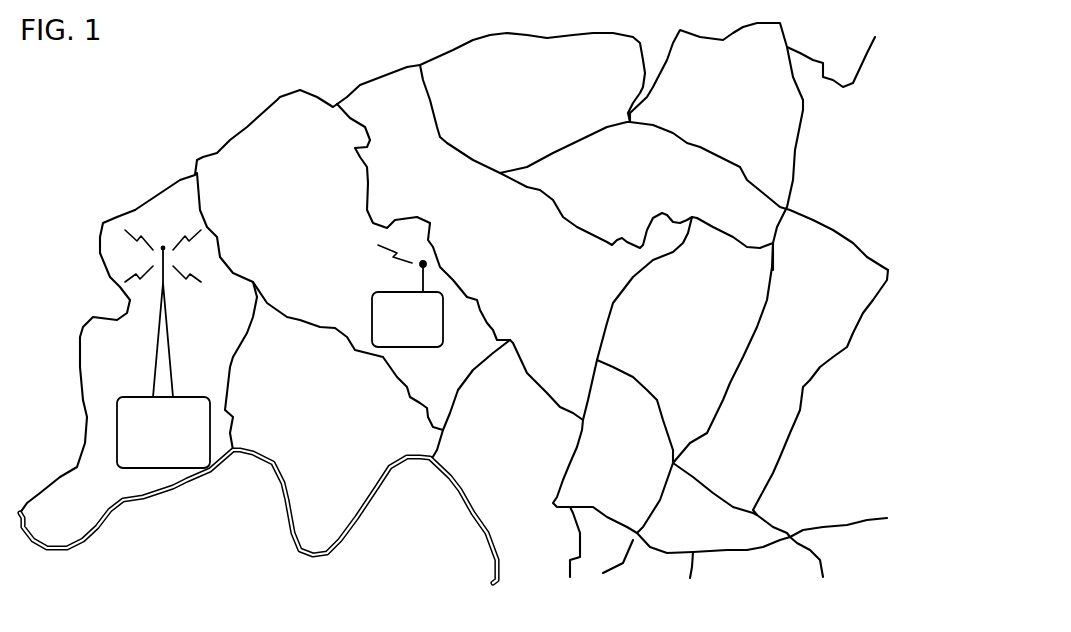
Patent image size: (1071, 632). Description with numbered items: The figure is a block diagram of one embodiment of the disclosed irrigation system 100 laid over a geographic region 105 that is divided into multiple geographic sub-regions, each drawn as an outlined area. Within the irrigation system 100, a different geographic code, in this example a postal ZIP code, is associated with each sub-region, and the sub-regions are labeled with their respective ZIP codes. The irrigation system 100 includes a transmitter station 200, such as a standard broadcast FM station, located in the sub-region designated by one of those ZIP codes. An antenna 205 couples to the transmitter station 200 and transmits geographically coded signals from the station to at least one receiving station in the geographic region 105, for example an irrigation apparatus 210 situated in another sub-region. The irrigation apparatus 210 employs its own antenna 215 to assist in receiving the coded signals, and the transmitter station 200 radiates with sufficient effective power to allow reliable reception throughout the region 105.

The irrigation system 100 is at (160, 92).
The geographic region 105 is at (453, 49).
The transmitter station 200 is at (133, 397).
The antenna 205 is at (172, 340).
The irrigation apparatus 210 is at (394, 292).
The antenna 215 is at (422, 282).